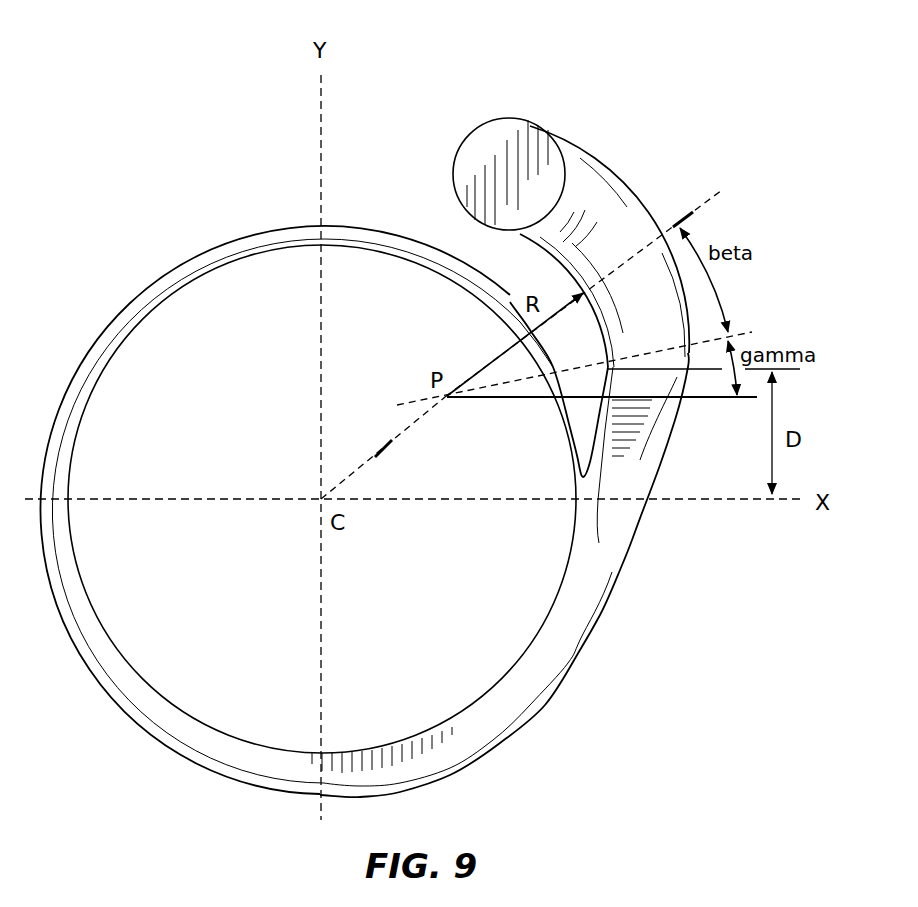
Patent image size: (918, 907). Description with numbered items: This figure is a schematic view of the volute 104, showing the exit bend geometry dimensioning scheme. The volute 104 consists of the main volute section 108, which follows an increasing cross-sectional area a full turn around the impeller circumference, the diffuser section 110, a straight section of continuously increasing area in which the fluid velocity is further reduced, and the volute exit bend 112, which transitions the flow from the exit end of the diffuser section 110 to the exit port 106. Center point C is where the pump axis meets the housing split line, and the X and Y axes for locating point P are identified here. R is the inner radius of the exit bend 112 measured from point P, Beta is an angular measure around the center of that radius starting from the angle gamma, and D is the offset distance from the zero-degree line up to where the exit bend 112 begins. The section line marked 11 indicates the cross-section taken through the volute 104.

The volute 104 is at (190, 95).
The exit port 106 is at (470, 160).
The main volute section 108 is at (133, 292).
The diffuser section 110 is at (655, 455).
The volute exit bend 112 is at (626, 206).
The section line 11- 11 is at (383, 440).